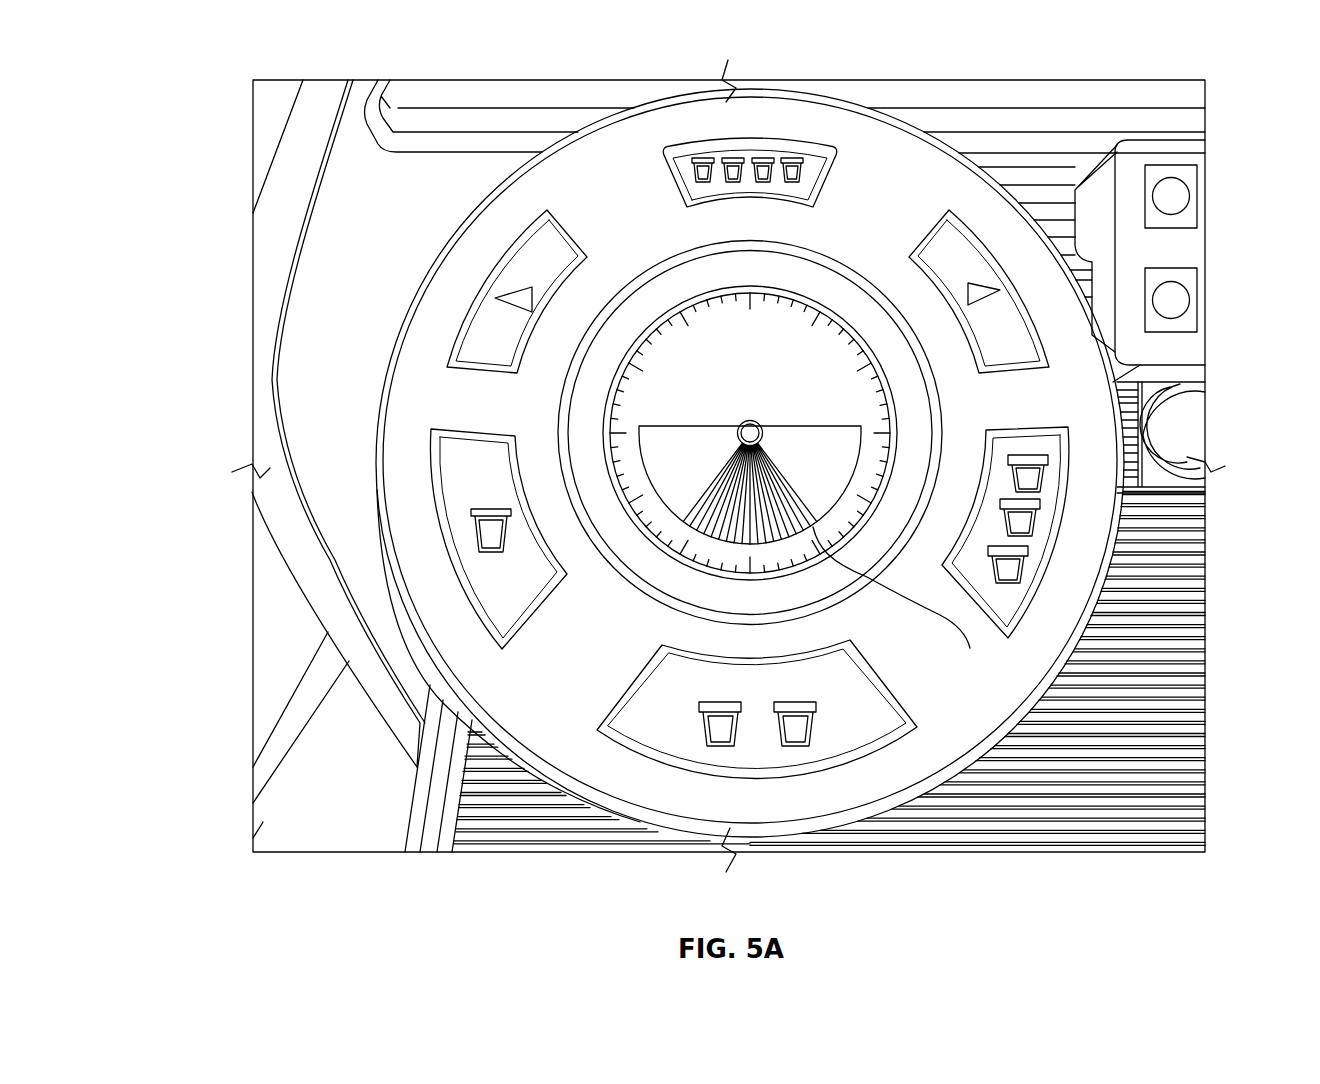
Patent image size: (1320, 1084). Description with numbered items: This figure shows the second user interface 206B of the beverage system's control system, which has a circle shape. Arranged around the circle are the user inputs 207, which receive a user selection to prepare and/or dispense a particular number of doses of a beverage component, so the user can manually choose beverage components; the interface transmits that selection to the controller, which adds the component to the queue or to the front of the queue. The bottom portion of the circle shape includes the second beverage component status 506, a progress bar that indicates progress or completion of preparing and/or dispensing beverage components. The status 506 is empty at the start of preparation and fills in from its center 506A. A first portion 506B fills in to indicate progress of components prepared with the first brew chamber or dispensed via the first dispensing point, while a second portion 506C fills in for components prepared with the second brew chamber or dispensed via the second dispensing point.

The second user interface 206B is at (212, 80).
The user inputs 207 is at (760, 154).
The second beverage component status 506 is at (705, 575).
The center 506A is at (752, 545).
The first portion 506B is at (685, 523).
The second portion 506C is at (907, 604).